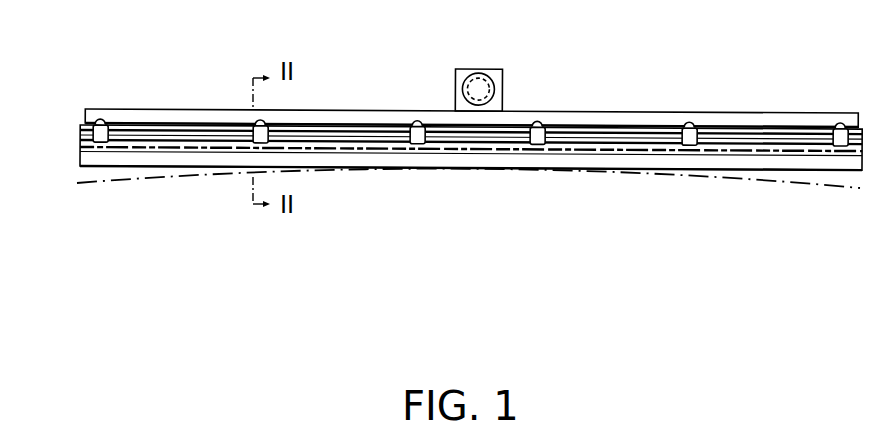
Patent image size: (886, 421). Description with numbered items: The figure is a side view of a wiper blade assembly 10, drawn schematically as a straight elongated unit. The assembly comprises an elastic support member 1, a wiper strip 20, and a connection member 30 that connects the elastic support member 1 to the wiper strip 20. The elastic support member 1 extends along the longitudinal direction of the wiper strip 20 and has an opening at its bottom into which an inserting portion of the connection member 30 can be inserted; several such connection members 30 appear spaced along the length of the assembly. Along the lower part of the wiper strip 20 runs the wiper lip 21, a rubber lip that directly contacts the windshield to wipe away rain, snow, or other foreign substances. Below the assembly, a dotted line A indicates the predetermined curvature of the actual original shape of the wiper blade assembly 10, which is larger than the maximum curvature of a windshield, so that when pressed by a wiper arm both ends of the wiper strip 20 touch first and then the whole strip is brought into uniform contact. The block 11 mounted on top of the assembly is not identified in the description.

The elastic support member 1 is at (182, 109).
The wiper blade assembly 10 is at (703, 105).
The pulley housing 11 is at (491, 67).
The wiper strip 20 is at (76, 160).
The wiper lip 21 is at (193, 164).
The connection member 30 is at (100, 127).
The dotted line A is at (795, 185).